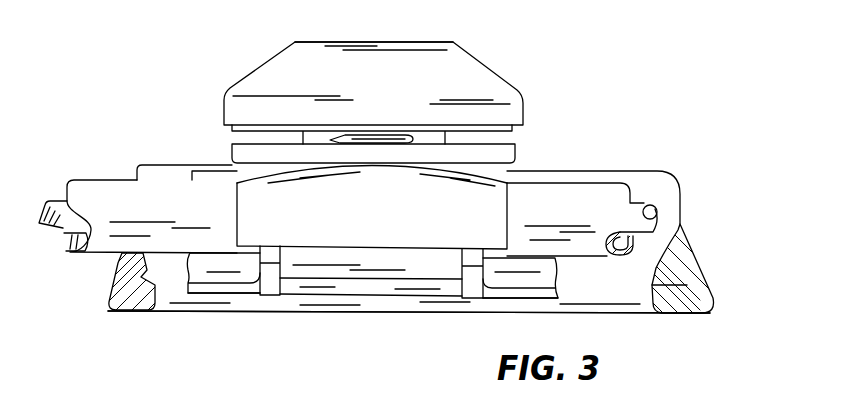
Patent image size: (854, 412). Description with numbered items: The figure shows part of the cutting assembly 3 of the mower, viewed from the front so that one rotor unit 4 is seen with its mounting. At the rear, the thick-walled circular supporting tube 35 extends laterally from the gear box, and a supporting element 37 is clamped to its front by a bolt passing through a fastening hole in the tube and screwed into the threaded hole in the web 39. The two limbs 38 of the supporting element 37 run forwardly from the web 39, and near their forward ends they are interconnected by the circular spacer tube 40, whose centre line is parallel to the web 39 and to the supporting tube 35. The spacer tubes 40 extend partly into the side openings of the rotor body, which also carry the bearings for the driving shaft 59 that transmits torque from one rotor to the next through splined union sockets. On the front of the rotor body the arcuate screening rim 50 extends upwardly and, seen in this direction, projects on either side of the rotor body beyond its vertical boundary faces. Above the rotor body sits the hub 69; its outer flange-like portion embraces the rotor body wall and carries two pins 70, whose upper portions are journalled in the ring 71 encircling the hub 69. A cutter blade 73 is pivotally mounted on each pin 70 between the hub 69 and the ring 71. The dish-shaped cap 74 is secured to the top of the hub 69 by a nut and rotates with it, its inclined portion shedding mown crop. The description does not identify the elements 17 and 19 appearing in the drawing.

The cutting assembly 3 is at (204, 320).
The rotor unit 4 is at (521, 83).
The wall of dome housing 17 is at (227, 207).
The bottom plate 19 is at (414, 262).
The supporting tube 35 is at (653, 183).
The supporting element 37 is at (266, 296).
The limbs 38 is at (273, 261).
The web 39 is at (228, 284).
The spacer tube 40 is at (98, 188).
The screening rim 50 is at (390, 169).
The driving shaft 59 is at (656, 215).
The hub 69 is at (232, 147).
The pin 70 is at (383, 117).
The ring 71 is at (283, 110).
The cutter blade 73 is at (402, 135).
The cap 74 is at (272, 58).